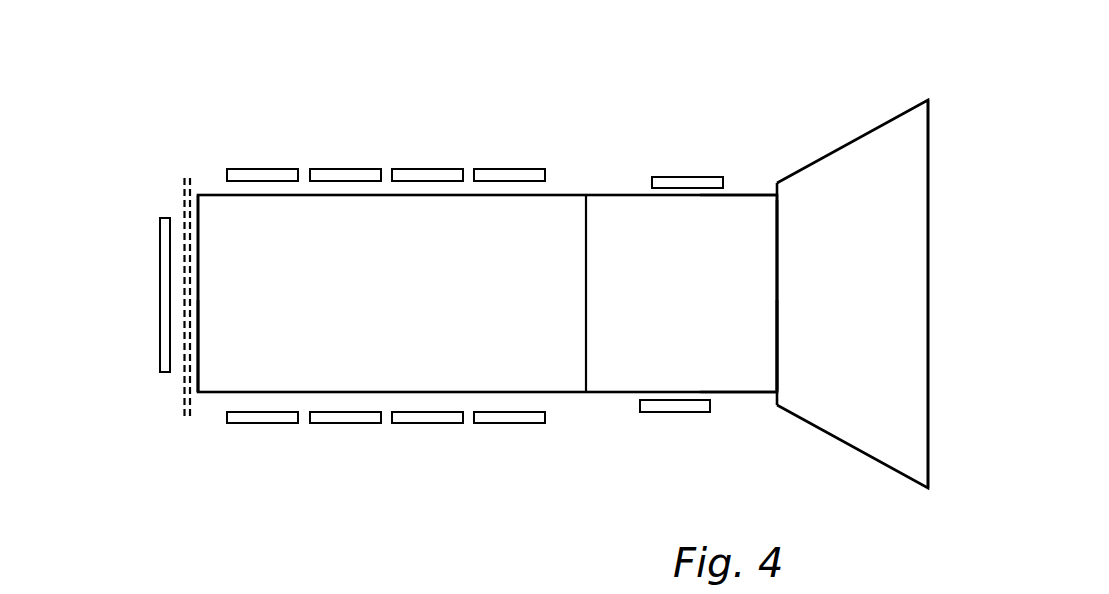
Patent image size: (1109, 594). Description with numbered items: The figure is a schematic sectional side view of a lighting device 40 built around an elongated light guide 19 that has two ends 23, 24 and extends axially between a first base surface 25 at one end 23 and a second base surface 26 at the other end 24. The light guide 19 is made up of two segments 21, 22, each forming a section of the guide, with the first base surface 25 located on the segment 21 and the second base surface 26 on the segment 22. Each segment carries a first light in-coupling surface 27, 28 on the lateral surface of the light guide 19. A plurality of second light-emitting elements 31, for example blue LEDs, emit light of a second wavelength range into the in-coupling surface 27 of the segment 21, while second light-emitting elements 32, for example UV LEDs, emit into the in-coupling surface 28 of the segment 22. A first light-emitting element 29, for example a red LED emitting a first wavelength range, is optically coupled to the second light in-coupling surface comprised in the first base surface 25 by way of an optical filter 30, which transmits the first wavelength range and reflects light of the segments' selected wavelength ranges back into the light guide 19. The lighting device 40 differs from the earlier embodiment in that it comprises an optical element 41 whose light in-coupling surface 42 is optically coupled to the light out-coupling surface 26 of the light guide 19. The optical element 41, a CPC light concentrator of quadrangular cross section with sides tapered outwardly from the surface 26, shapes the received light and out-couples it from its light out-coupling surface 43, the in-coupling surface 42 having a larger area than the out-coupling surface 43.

The light guide 19 is at (565, 177).
The segment 21 is at (552, 362).
The segment 22 is at (605, 213).
The end 23 is at (200, 182).
The end 24 is at (792, 172).
The first base surface 25 is at (197, 382).
The second base surface 26 is at (780, 223).
The first light in-coupling surface 27 is at (383, 196).
The first light in-coupling surface 28 is at (733, 195).
The first light-emitting element 29 is at (160, 252).
The optical filter 30 is at (183, 188).
The second light-emitting elements 31 is at (263, 168).
The second light-emitting elements 32 is at (690, 177).
The lighting device 40 is at (203, 128).
The optical element 41 is at (917, 133).
The light in-coupling surface 42 is at (775, 367).
The light out-coupling surface 43 is at (928, 303).